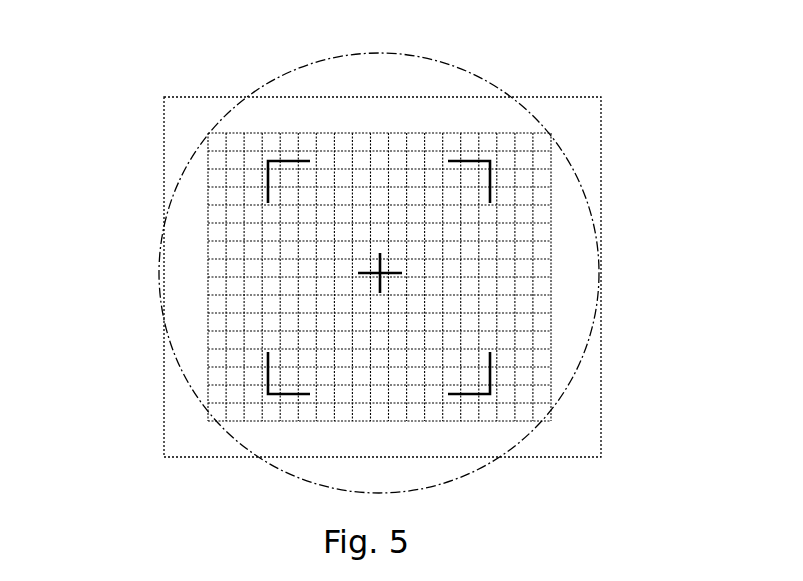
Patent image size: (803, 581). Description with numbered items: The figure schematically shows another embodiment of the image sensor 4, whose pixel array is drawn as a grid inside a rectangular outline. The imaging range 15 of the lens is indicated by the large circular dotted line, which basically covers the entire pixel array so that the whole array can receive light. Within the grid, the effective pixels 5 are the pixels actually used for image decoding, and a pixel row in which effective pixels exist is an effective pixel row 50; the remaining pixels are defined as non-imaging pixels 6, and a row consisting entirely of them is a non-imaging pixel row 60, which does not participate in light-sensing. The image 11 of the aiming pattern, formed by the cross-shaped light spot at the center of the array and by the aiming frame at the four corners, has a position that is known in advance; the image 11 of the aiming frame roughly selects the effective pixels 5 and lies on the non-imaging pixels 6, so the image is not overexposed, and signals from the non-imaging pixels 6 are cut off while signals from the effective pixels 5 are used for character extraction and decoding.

The image sensor 4 is at (93, 32).
The imaging range 15 is at (158, 271).
The effective pixels 5 is at (439, 277).
The effective pixel row 50 is at (455, 212).
The non-imaging pixels 6 is at (445, 277).
The non-imaging pixel row 60 is at (445, 277).
The image 11 is at (288, 160).